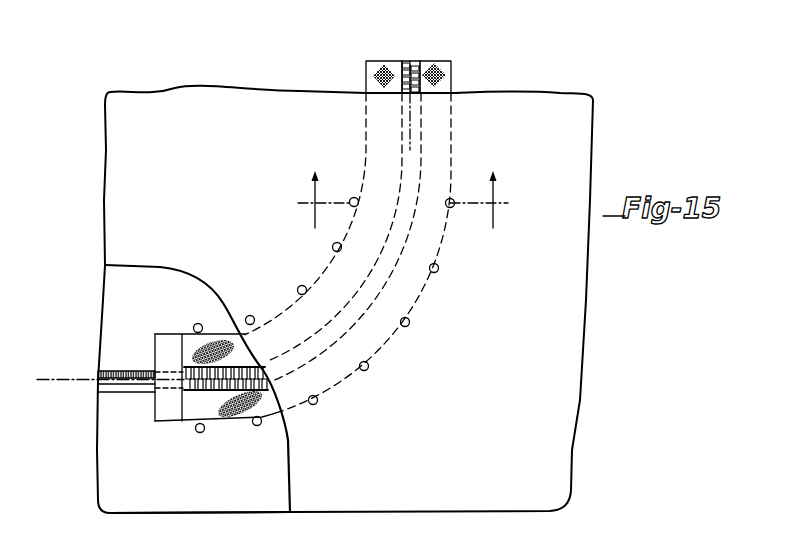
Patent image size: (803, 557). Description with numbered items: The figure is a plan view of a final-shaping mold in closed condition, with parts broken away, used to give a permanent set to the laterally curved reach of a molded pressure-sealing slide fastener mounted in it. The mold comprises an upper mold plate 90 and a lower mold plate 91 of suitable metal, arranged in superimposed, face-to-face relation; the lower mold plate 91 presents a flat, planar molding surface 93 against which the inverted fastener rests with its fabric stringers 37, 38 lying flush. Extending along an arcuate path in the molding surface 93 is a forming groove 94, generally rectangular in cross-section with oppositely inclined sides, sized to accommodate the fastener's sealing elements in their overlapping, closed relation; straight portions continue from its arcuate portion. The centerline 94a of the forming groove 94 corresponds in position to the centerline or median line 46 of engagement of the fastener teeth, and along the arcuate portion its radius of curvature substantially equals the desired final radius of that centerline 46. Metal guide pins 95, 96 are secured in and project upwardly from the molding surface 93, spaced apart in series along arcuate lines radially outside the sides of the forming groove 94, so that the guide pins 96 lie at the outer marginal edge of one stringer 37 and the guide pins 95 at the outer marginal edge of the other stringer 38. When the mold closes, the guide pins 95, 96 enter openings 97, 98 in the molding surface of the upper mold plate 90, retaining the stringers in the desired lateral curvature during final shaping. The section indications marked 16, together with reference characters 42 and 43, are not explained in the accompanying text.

The upper mold plate 90 is at (390, 496).
The lower mold plate 91 is at (200, 514).
The molding surface 93 is at (165, 494).
The forming groove 94 is at (98, 391).
The centerline of the forming groove 94a is at (82, 377).
The guide pins 95 is at (196, 324).
The guide pins 96 is at (200, 433).
The openings 97 is at (252, 317).
The openings 98 is at (409, 320).
The section line 16 is at (403, 173).
The fabric stringer 37 is at (232, 418).
The fabric stringer 38 is at (232, 336).
The flap 42 is at (170, 345).
The flap 43 is at (167, 418).
The centerline of engagement of the teeth 46 is at (410, 61).